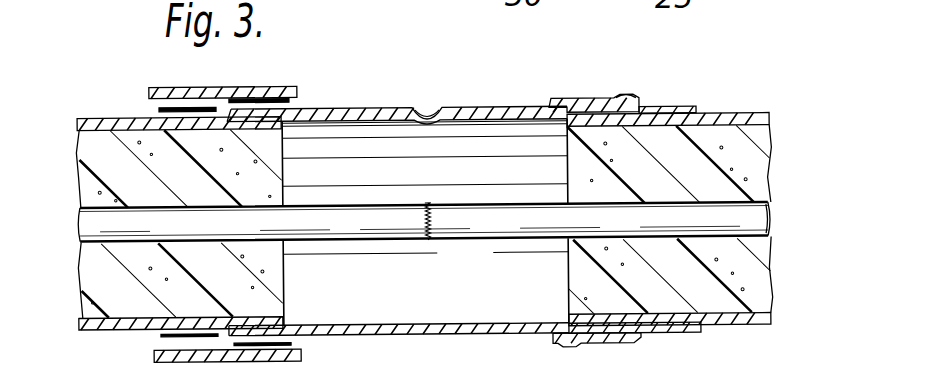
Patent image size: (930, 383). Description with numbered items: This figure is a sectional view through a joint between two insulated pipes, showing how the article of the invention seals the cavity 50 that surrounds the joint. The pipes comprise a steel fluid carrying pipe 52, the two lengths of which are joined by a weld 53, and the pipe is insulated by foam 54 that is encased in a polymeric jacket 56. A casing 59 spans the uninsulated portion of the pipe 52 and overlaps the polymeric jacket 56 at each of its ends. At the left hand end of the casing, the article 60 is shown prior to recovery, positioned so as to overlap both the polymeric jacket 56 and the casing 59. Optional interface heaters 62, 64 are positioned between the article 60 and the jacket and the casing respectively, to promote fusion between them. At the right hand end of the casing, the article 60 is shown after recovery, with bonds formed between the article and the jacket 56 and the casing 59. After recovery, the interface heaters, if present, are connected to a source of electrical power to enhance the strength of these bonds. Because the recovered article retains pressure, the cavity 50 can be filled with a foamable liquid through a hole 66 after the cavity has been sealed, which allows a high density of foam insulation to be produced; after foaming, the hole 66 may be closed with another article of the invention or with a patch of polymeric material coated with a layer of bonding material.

The cavity 50 is at (496, 305).
The steel fluid carrying pipe 52 is at (675, 192).
The weld 53 is at (430, 244).
The foam 54 is at (722, 142).
The polymeric jacket 56 is at (708, 328).
The casing 59 is at (385, 330).
The article 60 is at (167, 87).
The interface heater 62 is at (160, 108).
The interface heater 64 is at (282, 98).
The hole 66 is at (425, 110).